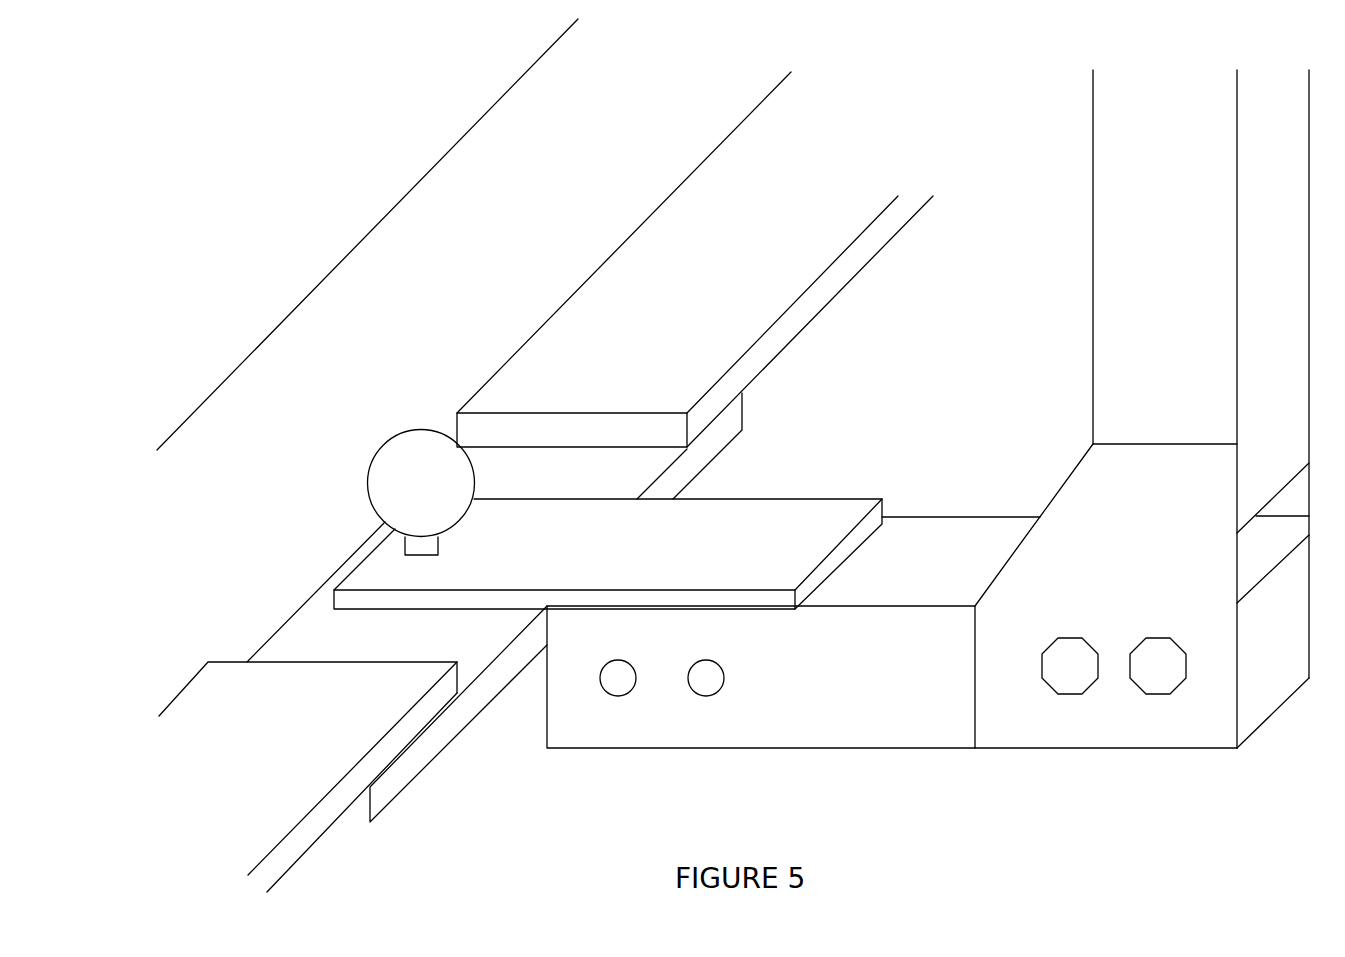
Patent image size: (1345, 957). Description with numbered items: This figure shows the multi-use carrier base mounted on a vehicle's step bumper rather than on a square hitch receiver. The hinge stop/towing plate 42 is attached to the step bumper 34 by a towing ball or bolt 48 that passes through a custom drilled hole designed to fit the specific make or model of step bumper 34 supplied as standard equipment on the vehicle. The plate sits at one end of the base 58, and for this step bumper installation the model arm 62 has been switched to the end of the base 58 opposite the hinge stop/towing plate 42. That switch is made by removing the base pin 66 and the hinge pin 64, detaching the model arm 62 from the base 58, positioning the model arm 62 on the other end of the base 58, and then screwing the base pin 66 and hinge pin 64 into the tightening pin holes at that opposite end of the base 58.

The step bumper 34 is at (862, 197).
The hinge stop/towing plate 42 is at (828, 518).
The towing ball or bolt 48 is at (403, 448).
The base 58 is at (653, 732).
The model arm 62 is at (1148, 355).
The hinge pin 64 is at (1168, 675).
The base pin 66 is at (1062, 676).